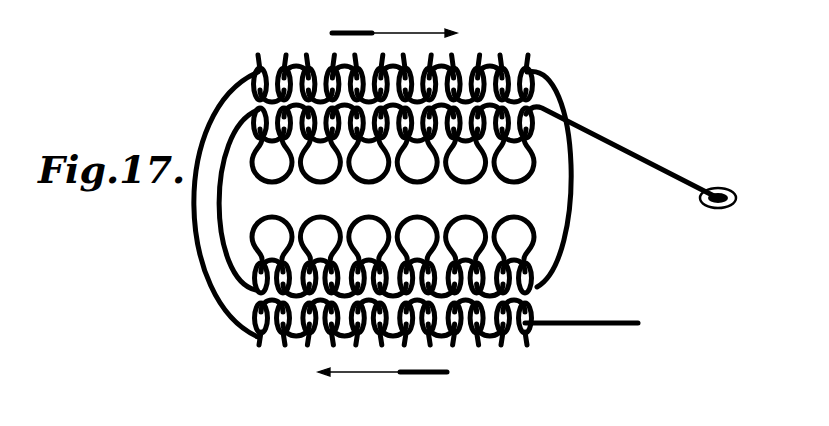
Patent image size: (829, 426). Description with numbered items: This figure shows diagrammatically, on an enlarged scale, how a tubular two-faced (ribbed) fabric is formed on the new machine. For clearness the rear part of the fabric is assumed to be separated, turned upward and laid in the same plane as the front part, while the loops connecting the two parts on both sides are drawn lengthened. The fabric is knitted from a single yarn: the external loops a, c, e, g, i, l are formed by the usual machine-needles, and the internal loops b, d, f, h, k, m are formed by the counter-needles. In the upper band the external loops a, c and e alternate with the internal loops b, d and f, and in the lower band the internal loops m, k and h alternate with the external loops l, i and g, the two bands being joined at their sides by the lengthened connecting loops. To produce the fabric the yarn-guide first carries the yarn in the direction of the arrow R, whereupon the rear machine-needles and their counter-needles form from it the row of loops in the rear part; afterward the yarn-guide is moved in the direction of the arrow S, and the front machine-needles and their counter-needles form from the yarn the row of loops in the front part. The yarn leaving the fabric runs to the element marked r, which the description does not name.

The external loop a is at (280, 118).
The internal loop b is at (328, 118).
The external loop c is at (377, 118).
The internal loop d is at (425, 118).
The external loop e is at (474, 118).
The internal loop f is at (514, 118).
The external loop g is at (514, 281).
The internal loop h is at (474, 281).
The external loop i is at (425, 281).
The internal loop k is at (377, 281).
The external loop l is at (328, 281).
The internal loop m is at (280, 281).
The yarn end / thread guide r is at (631, 171).
The arrow R is at (394, 18).
The arrow S is at (382, 394).